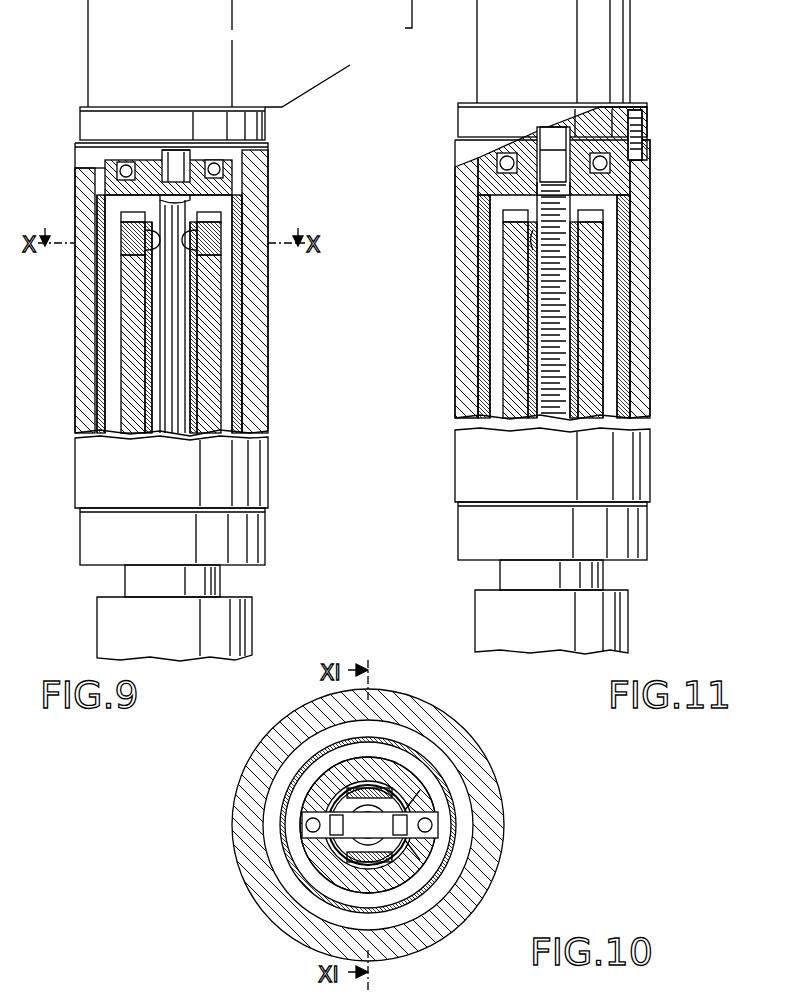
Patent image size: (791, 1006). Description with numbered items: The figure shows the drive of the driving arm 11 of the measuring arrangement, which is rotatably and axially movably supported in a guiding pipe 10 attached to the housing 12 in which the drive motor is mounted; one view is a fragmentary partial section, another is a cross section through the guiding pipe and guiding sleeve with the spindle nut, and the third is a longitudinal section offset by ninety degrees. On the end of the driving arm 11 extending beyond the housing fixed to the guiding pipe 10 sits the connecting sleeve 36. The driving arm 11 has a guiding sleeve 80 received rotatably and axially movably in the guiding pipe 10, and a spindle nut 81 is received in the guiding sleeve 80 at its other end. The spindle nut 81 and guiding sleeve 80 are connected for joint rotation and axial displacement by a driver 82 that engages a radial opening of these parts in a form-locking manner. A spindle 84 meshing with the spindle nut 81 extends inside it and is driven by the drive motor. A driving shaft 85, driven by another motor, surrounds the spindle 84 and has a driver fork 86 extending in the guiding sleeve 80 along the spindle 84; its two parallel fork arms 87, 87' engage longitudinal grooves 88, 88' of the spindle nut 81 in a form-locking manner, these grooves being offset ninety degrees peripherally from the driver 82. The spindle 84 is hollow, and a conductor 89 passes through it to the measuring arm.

In FIG. 9, the guiding pipe 10 is at (276, 469).
In FIG. 11, the guiding pipe 10 is at (455, 210).
In FIG. 10, the guiding pipe 10 is at (238, 791).
In FIG. 9, the driving arm 11 is at (221, 580).
In FIG. 11, the driving arm 11 is at (604, 578).
In FIG. 9, the housing 12 is at (283, 58).
In FIG. 11, the housing 12 is at (602, 45).
In FIG. 9, the connecting sleeve 36 is at (235, 617).
In FIG. 11, the connecting sleeve 36 is at (610, 639).
In FIG. 9, the guiding sleeve 80 is at (208, 328).
In FIG. 11, the guiding sleeve 80 is at (590, 307).
In FIG. 10, the guiding sleeve 80 is at (337, 770).
In FIG. 9, the spindle nut 81 is at (190, 303).
In FIG. 11, the spindle nut 81 is at (537, 288).
In FIG. 10, the spindle nut 81 is at (433, 873).
In FIG. 9, the driver 82 is at (212, 247).
In FIG. 10, the driver 82 is at (440, 853).
In FIG. 9, the spindle 84 is at (188, 379).
In FIG. 11, the spindle 84 is at (545, 392).
In FIG. 10, the spindle 84 is at (428, 800).
In FIG. 9, the driving shaft 85 is at (193, 188).
In FIG. 11, the driving shaft 85 is at (585, 180).
In FIG. 11, the driver fork 86 is at (584, 383).
In FIG. 9, the fork arm 87 is at (225, 312).
In FIG. 11, the fork arm 87 is at (628, 320).
In FIG. 10, the fork arm 87 is at (402, 918).
In FIG. 11, the fork arm 87' is at (478, 320).
In FIG. 10, the fork arm 87' is at (389, 729).
In FIG. 10, the longitudinal groove 88 is at (346, 888).
In FIG. 10, the longitudinal groove 88' is at (450, 780).
In FIG. 9, the conductor 89 is at (172, 417).